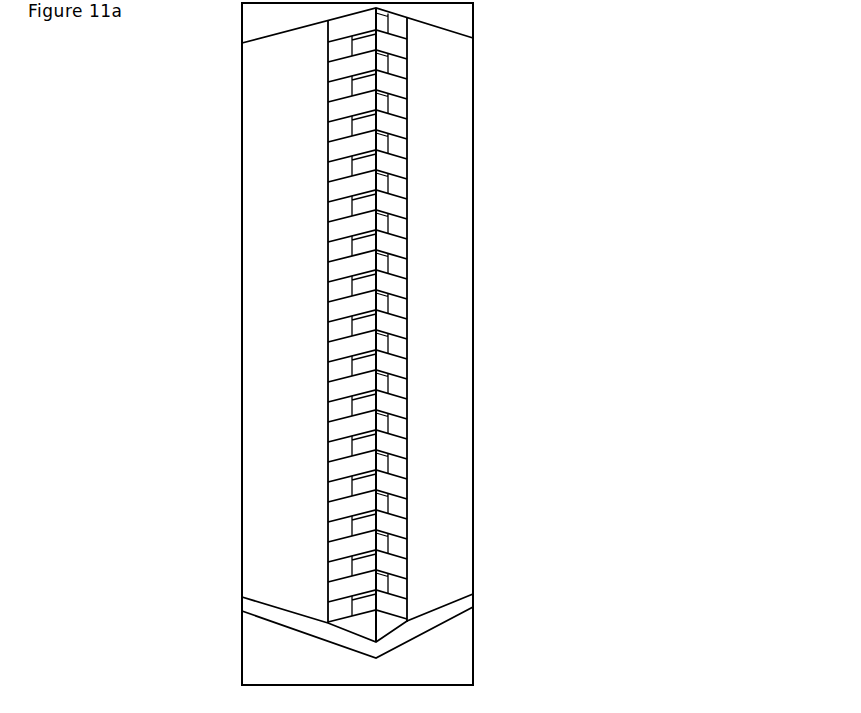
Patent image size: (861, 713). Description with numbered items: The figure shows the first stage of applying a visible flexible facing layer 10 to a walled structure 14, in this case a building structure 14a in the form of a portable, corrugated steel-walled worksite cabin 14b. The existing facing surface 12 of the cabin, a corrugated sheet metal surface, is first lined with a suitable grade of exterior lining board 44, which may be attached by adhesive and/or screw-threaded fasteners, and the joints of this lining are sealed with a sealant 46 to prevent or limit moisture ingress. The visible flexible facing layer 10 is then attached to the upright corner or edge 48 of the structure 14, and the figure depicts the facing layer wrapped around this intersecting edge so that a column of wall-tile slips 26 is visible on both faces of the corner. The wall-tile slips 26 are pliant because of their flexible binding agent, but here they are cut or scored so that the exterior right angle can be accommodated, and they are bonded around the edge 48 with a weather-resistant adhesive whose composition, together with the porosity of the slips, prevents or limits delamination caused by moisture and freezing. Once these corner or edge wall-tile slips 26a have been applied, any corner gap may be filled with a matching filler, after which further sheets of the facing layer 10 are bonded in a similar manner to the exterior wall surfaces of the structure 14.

The visible flexible facing layer 10 is at (415, 122).
The facing surface 12 is at (253, 122).
The structure 14 is at (253, 208).
The building structure 14a is at (253, 262).
The portable worksite cabin 14b is at (245, 425).
The wall-tile slips 26 is at (414, 401).
The corner or edge wall-tile slips 26a is at (410, 476).
The exterior lining board 44 is at (253, 71).
The sealant 46 is at (246, 332).
The upright corner or edge 48 is at (390, 248).